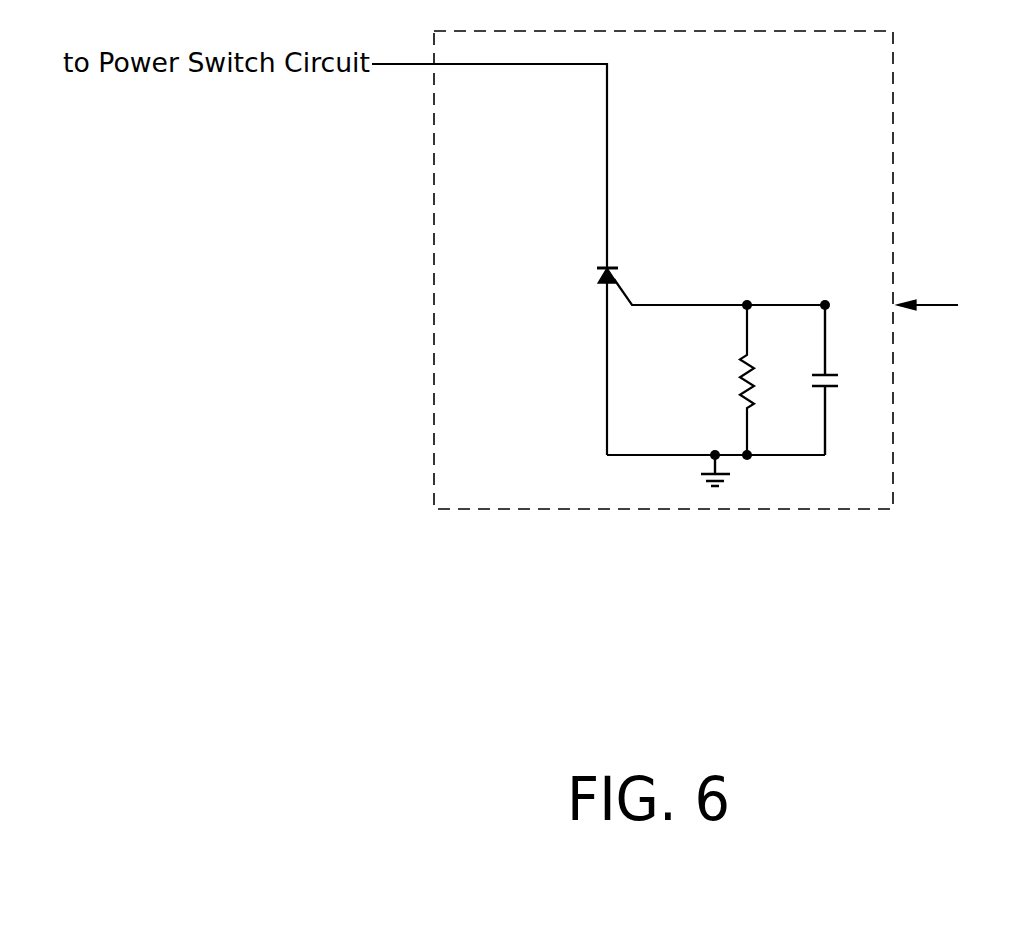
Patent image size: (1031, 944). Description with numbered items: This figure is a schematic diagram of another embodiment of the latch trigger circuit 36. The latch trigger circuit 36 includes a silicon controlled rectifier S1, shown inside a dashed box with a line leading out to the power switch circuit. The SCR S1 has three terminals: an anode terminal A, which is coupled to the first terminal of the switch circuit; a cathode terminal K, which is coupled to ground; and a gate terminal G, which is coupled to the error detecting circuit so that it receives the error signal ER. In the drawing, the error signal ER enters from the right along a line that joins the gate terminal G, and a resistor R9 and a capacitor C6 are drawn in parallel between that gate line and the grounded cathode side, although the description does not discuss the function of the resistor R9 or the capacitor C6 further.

The latch trigger circuit 36 is at (686, 511).
The silicon controlled rectifier S1 is at (703, 338).
The resistor R9 is at (768, 380).
The capacitor C6 is at (844, 380).
The error signal ER is at (947, 305).
The anode terminal A is at (594, 243).
The cathode terminal K is at (591, 309).
The gate terminal G is at (641, 287).